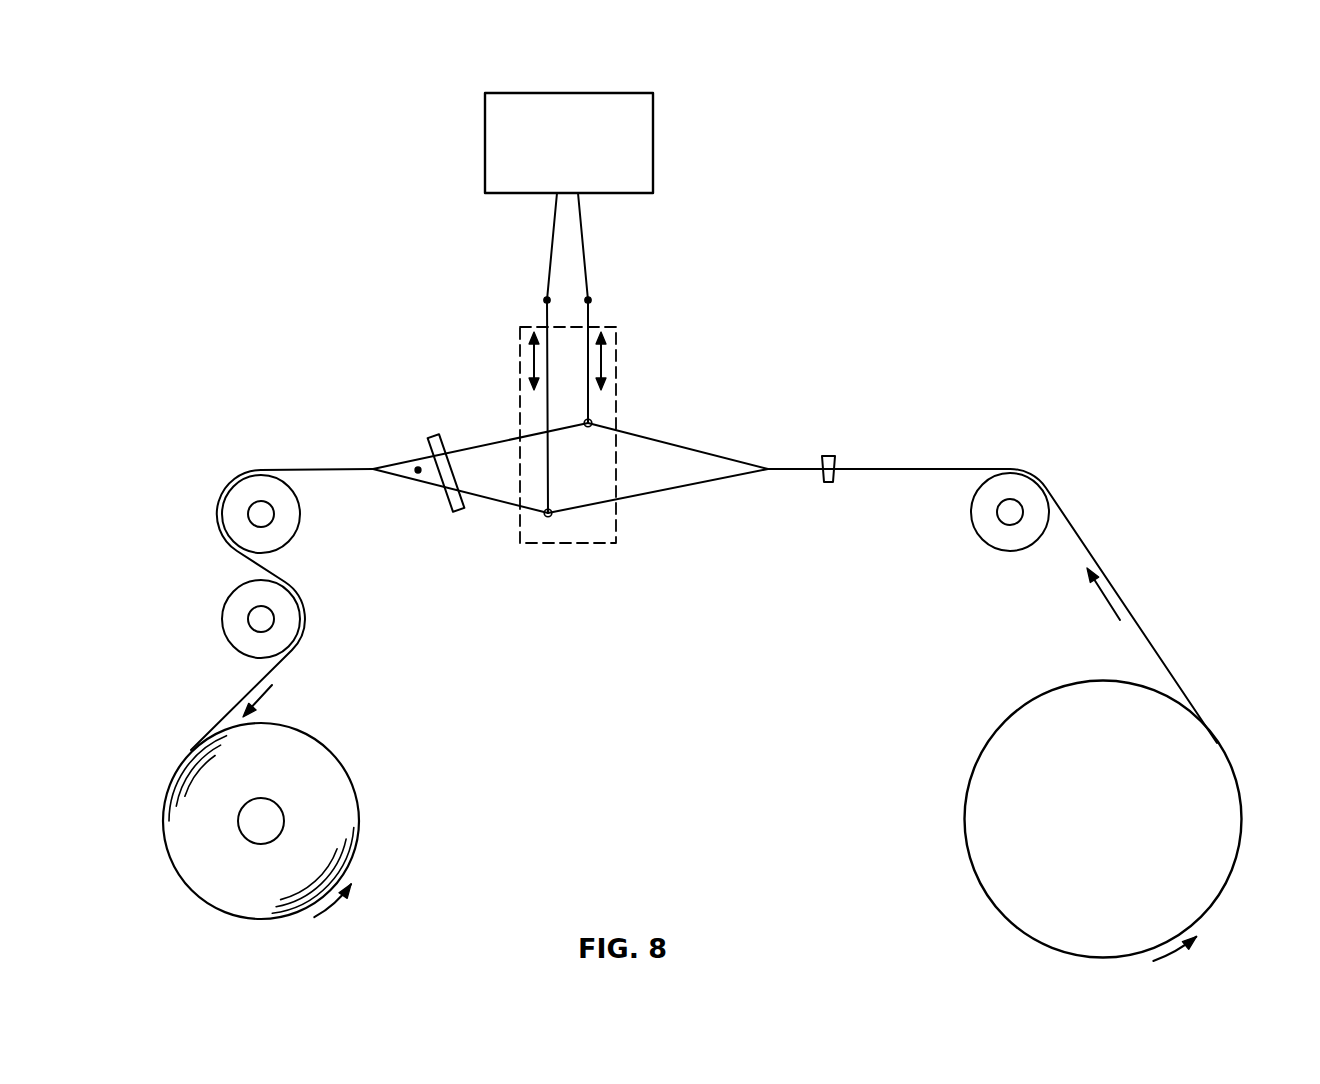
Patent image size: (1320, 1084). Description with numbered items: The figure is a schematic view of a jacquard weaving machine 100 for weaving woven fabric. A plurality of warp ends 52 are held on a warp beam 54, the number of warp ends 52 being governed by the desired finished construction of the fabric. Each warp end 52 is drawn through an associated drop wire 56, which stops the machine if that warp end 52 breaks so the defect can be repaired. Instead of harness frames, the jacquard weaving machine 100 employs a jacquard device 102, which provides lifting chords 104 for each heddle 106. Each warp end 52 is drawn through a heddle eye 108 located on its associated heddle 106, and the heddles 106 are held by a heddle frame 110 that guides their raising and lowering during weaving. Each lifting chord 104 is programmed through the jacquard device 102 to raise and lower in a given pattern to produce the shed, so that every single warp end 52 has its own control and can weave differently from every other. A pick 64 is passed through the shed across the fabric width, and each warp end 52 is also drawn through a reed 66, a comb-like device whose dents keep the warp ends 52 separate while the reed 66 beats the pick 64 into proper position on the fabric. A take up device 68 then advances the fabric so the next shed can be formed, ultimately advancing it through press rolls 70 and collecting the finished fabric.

The jacquard weaving machine 100 is at (1002, 231).
The jacquard device 102 is at (653, 126).
The lifting chords 104 is at (553, 253).
The heddle 106 is at (546, 410).
The heddle eye 108 is at (592, 420).
The heddle frame 110 is at (617, 528).
The reed 66 is at (436, 442).
The pick 64 is at (418, 470).
The drop wire 56 is at (829, 455).
The warp ends 52 is at (717, 452).
The press rolls 70 is at (231, 566).
The take up device 68 is at (327, 777).
The warp beam 54 is at (1213, 815).